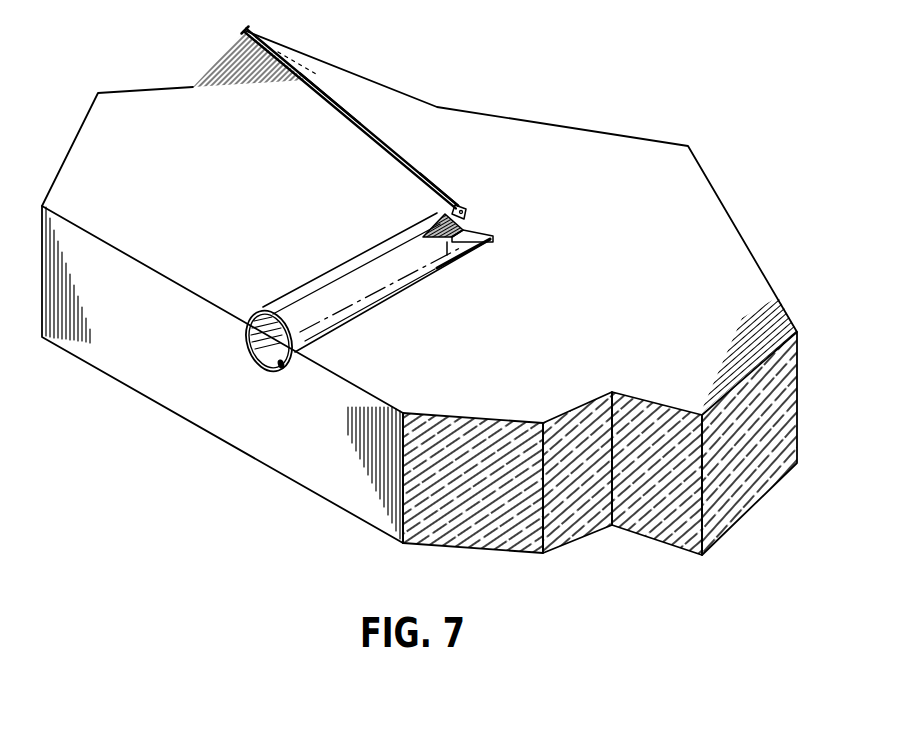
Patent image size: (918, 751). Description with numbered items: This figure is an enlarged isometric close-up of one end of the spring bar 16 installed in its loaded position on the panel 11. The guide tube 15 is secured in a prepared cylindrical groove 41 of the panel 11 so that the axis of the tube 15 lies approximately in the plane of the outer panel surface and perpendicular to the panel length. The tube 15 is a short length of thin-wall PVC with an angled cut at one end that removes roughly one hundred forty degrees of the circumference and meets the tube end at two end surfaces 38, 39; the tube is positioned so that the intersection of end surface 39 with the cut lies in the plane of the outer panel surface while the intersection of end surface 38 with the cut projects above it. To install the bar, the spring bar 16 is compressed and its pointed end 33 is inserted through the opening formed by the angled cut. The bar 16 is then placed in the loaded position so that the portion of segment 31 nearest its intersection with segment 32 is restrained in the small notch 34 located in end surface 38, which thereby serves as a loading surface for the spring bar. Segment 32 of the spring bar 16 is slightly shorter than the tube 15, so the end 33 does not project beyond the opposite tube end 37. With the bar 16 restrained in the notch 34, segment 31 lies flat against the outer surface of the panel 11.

The panel 11 is at (159, 168).
The guide tube 15 is at (355, 282).
The spring bar 16 is at (327, 102).
The segment 31 is at (366, 128).
The segment 32 is at (448, 240).
The spring bar end 33 is at (283, 372).
The notch 34 is at (443, 200).
The tube end 37 is at (276, 345).
The end surface 38 is at (463, 208).
The end surface 39 is at (495, 240).
The cylindrical groove 41 is at (463, 229).